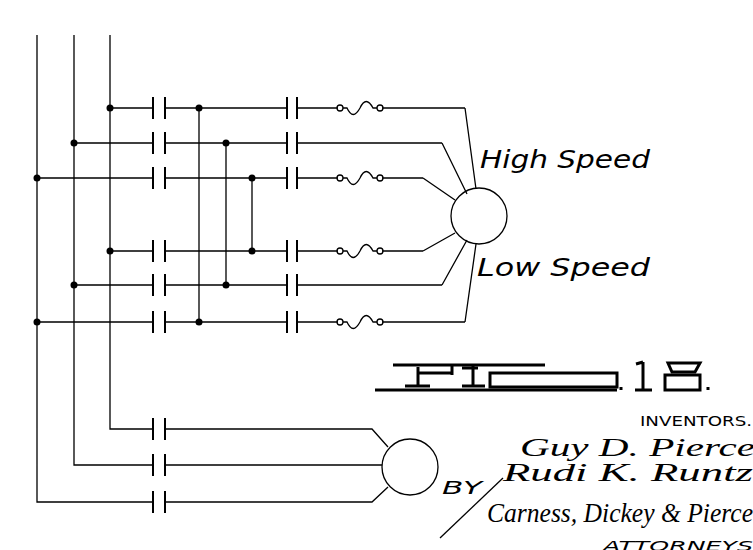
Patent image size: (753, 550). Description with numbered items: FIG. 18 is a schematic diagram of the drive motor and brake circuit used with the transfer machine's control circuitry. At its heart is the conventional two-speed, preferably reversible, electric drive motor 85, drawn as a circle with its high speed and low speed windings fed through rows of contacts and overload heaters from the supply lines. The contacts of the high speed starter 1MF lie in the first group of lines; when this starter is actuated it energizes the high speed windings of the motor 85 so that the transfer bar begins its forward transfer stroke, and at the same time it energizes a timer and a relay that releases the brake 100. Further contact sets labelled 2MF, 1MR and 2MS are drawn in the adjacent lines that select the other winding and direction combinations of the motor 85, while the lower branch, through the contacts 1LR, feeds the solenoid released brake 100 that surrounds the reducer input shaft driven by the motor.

The electric drive motor 85 is at (493, 208).
The solenoid released brake 100 is at (415, 455).
The high speed starter 1MF is at (164, 126).
The contacts of high-speed contactor 2MF is at (289, 126).
The contacts of reverse contactor 1MR is at (157, 268).
The contacts of low-speed contactor 2MS is at (292, 270).
The contacts of relay 1LR is at (159, 452).